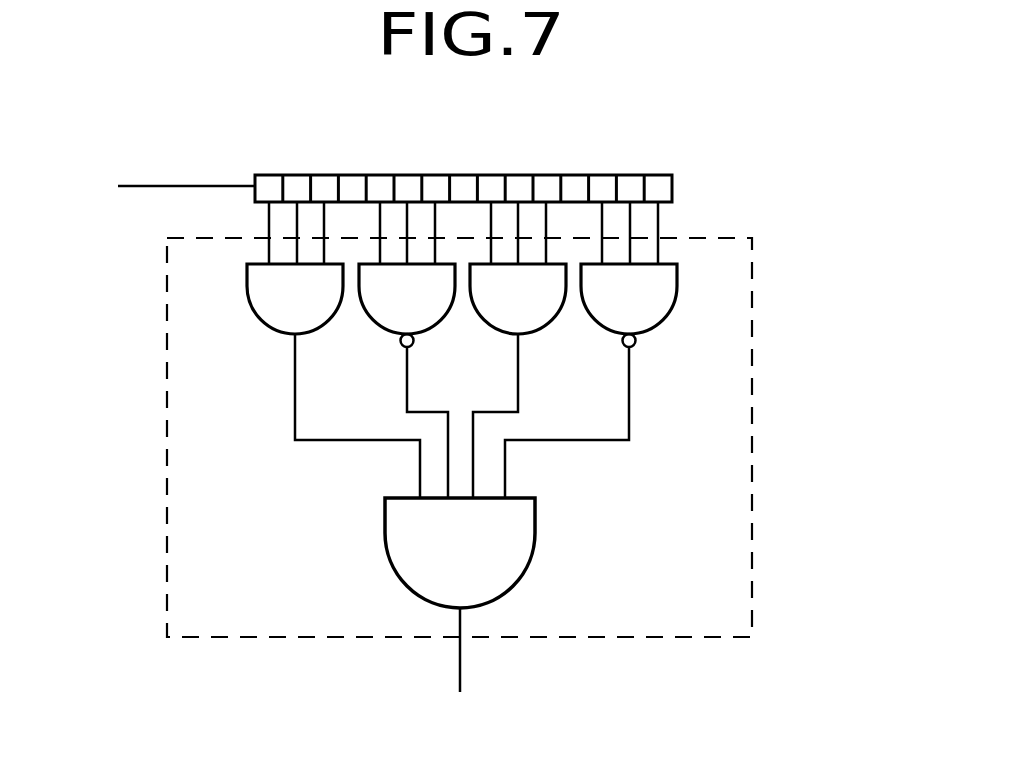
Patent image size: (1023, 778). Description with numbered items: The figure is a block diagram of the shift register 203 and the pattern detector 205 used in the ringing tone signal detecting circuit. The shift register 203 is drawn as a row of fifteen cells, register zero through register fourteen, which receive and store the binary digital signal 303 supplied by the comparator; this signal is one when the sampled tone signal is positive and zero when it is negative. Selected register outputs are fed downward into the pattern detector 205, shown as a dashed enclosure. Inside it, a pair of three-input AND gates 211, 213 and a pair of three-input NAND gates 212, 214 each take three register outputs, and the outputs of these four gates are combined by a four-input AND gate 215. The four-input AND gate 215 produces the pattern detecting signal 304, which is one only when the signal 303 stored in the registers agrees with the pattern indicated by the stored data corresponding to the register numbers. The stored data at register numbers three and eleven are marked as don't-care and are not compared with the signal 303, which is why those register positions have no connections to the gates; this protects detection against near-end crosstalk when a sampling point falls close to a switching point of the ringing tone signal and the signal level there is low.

The shift register 203 is at (255, 176).
The binary digital signal 303 is at (141, 189).
The pattern detector 205 is at (752, 308).
The three-input AND gate 211 is at (263, 327).
The three-input NAND gate 214 is at (374, 327).
The three-input AND gate 213 is at (549, 327).
The three-input NAND gate 212 is at (661, 327).
The four-input AND gate 215 is at (534, 553).
The pattern detecting signal 304 is at (462, 684).